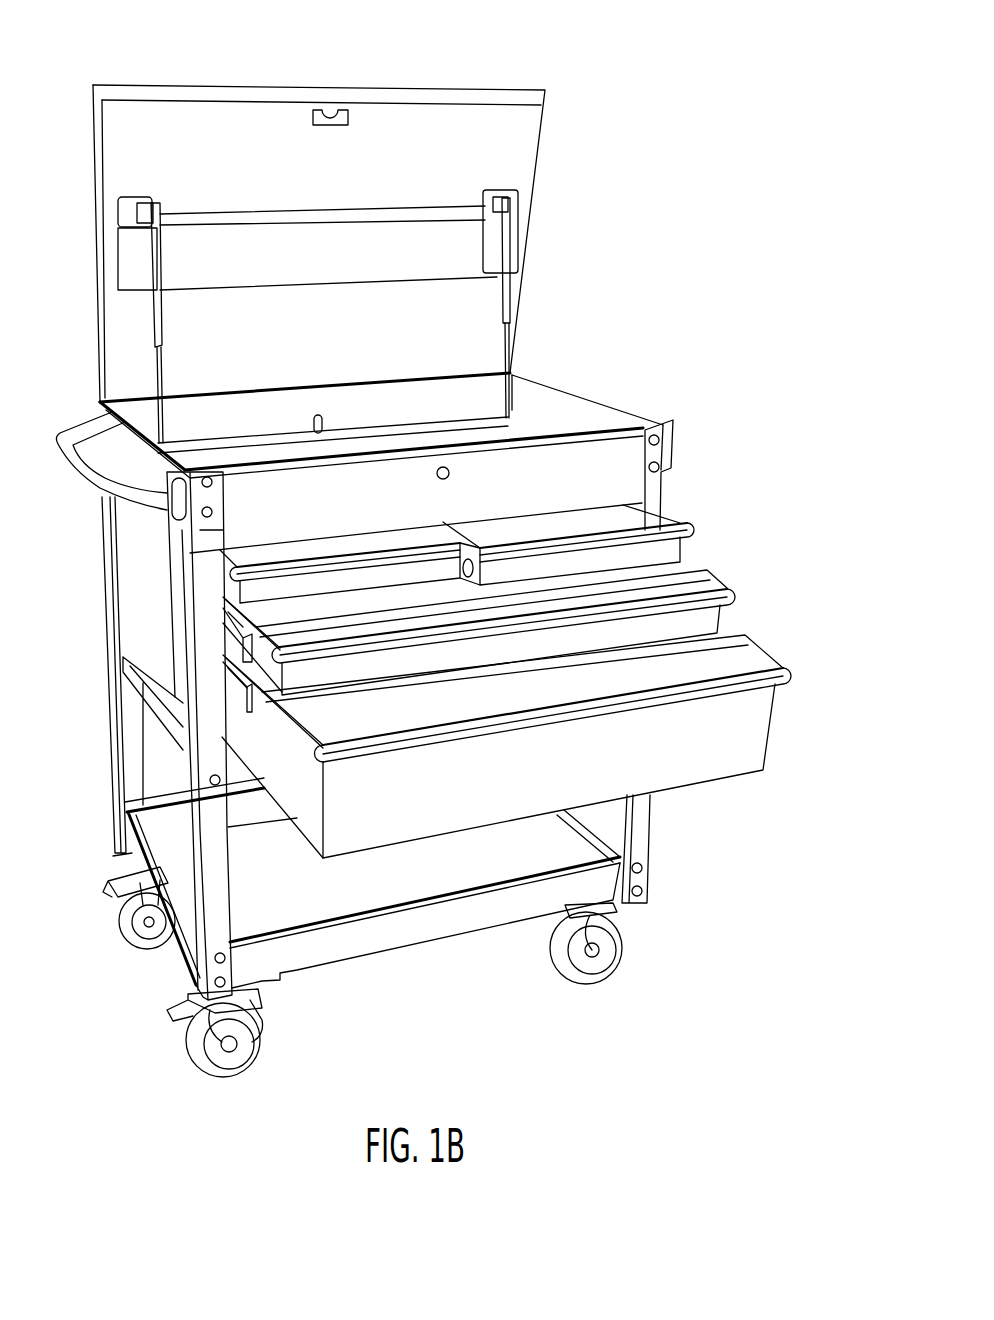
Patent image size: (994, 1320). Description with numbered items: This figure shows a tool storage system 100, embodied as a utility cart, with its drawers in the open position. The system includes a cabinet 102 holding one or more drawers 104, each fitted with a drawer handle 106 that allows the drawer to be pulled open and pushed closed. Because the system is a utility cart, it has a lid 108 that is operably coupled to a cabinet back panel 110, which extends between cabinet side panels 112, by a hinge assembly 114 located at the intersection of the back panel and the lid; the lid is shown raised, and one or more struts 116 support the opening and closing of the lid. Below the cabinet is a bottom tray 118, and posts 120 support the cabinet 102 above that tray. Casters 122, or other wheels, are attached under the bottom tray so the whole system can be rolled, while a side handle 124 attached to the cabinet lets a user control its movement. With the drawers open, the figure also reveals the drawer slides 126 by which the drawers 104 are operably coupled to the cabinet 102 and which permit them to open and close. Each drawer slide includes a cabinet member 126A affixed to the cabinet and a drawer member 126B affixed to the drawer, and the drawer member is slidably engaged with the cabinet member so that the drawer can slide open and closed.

The tool storage system 100 is at (583, 62).
The cabinet 102 is at (666, 385).
The drawers 104 is at (246, 598).
The drawer handles 106 is at (245, 572).
The lid 108 is at (98, 190).
The cabinet back panel 110 is at (445, 398).
The cabinet side panels 112 is at (160, 562).
The hinge assembly 114 is at (98, 401).
The struts 116 is at (156, 330).
The bottom tray 118 is at (438, 940).
The posts 120 is at (118, 795).
The casters 122 is at (119, 919).
The side handle 124 is at (72, 472).
The drawer slides 126 is at (220, 637).
The cabinet members 126A is at (246, 654).
The drawer members 126B is at (258, 684).